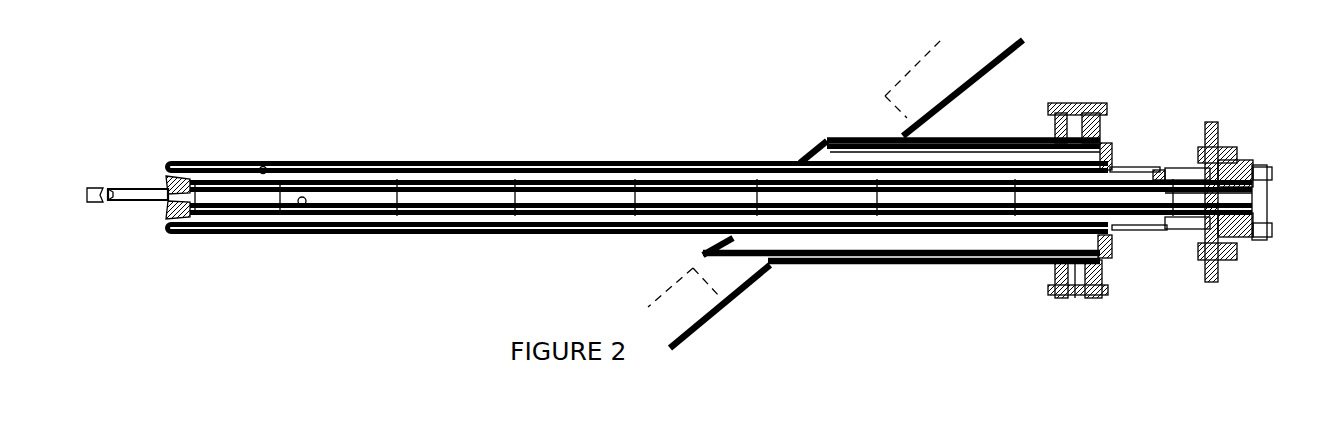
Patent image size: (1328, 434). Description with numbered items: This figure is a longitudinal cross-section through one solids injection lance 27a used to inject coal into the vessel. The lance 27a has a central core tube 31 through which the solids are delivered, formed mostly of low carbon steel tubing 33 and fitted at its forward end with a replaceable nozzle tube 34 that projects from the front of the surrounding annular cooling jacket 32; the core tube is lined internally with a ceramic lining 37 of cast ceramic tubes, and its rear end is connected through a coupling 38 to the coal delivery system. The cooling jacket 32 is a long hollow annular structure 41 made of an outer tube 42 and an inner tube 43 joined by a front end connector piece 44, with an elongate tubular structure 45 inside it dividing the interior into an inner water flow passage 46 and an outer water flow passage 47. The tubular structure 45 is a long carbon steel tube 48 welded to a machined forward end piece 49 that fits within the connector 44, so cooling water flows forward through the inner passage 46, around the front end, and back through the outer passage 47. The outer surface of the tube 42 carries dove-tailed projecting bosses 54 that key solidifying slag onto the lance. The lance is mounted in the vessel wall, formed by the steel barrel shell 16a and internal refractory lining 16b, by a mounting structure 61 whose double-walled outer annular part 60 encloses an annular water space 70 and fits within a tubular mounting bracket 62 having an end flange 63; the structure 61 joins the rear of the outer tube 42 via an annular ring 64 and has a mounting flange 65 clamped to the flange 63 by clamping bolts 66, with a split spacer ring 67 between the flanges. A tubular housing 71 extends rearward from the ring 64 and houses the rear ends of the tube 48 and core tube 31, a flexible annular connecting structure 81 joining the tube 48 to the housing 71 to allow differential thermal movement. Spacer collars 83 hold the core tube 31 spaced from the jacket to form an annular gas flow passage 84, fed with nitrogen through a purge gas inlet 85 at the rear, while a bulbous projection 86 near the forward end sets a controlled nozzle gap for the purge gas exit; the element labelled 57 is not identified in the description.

The steel barrel shell 16a is at (958, 107).
The internal refractory lining 16b is at (892, 85).
The injection lance 27a is at (372, 145).
The central core tube 31 is at (587, 192).
The annular cooling jacket 32 is at (688, 147).
The low carbon steel tubing 33 is at (302, 205).
The nozzle tube 34 is at (125, 200).
The ceramic lining 37 is at (367, 193).
The coupling 38 is at (1257, 160).
The hollow annular structure 41 is at (450, 157).
The outer tube 42 is at (517, 162).
The inner tube 43 is at (543, 180).
The front end connector piece 44 is at (166, 164).
The elongate tubular structure 45 is at (262, 172).
The inner elongate annular water flow passage 46 is at (765, 177).
The outer elongate annular water flow passage 47 is at (737, 167).
The carbon steel tube 48 is at (653, 163).
The forward end piece 49 is at (190, 172).
The projecting bosses 54 is at (492, 245).
The seal 57 is at (166, 178).
The outer annular part 60 is at (740, 268).
The mounting structure 61 is at (1098, 92).
The tubular lance mounting bracket 62 is at (973, 268).
The end flange 63 is at (1065, 298).
The annular ring 64 is at (1113, 242).
The annular mounting flange 65 is at (1103, 268).
The clamping bolts 66 is at (1103, 290).
The split spacer ring 67 is at (1075, 280).
The annular space 70 is at (878, 258).
The tubular housing 71 is at (1180, 167).
The flexible annular connecting structure 81 is at (1158, 173).
The spacer collars 83 is at (408, 217).
The annular gas flow passage 84 is at (310, 178).
The purge gas inlet 85 is at (1240, 160).
The bulbous projection 86 is at (167, 212).